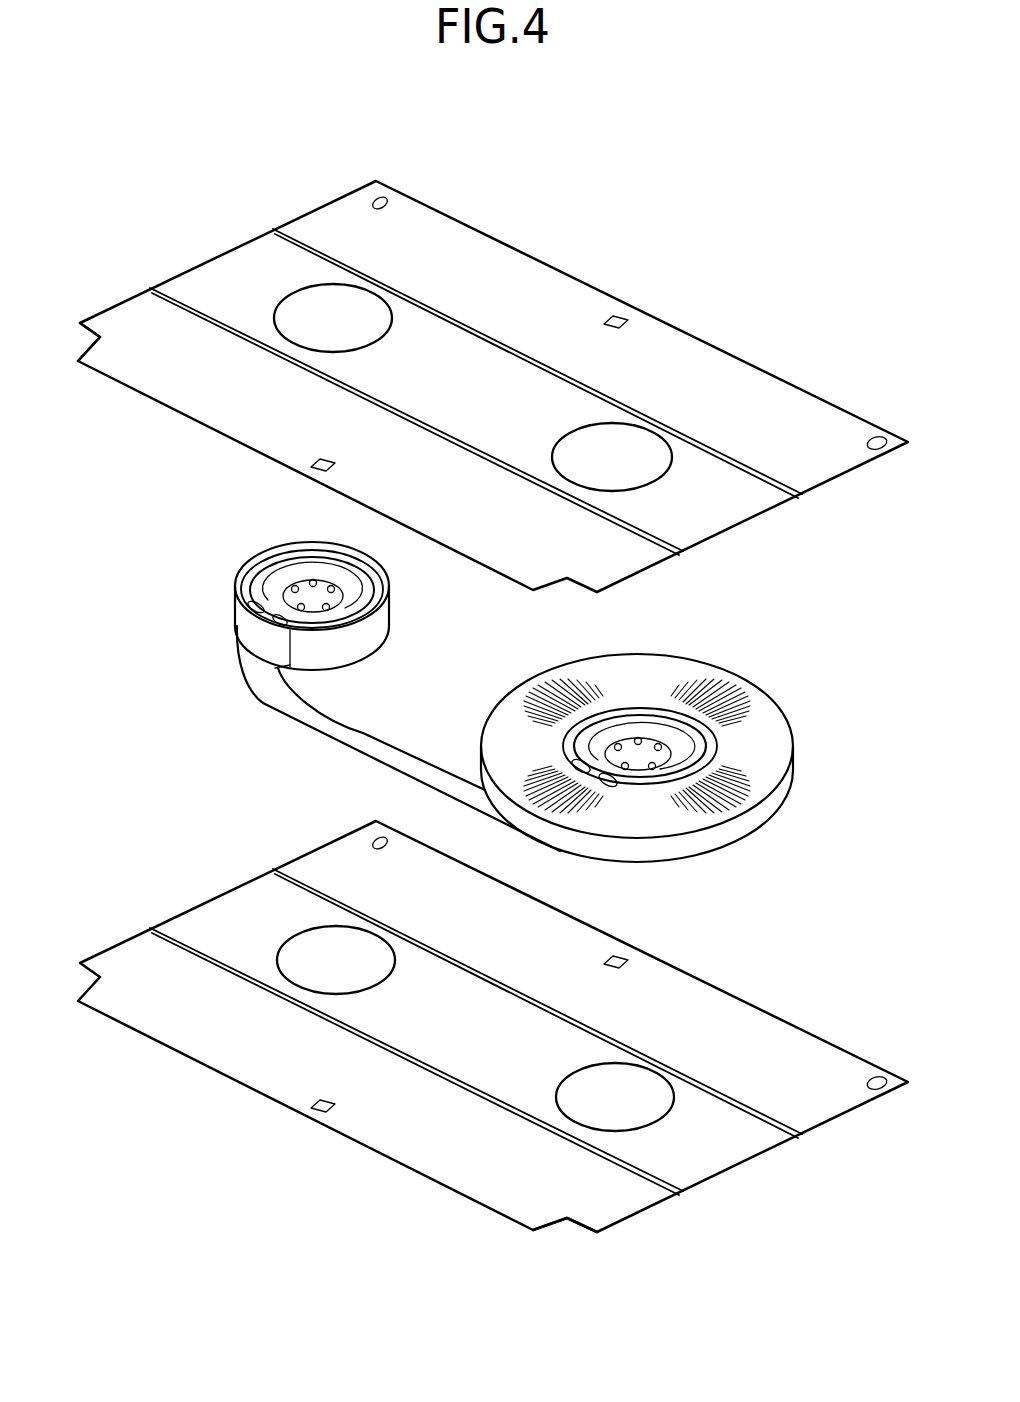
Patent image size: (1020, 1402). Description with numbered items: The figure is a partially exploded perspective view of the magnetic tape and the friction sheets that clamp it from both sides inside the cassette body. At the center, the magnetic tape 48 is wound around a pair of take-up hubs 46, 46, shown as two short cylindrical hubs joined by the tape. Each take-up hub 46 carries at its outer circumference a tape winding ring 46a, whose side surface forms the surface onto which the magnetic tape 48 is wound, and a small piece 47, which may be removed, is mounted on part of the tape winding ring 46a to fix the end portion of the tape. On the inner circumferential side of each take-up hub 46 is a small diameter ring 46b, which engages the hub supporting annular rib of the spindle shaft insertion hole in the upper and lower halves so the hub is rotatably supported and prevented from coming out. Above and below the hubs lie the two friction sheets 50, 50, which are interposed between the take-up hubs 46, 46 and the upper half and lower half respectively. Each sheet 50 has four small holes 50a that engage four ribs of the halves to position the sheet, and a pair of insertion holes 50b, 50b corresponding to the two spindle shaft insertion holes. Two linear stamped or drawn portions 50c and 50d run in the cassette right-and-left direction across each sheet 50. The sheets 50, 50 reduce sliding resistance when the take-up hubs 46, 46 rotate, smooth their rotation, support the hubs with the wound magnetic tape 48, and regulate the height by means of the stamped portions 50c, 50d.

The take-up hub 46 is at (498, 698).
The tape winding ring 46a is at (382, 620).
The small diameter ring 46b is at (300, 575).
The small piece 47 is at (253, 643).
The magnetic tape 48 is at (372, 742).
The friction sheet 50 is at (700, 370).
The small hole 50a is at (383, 198).
The insertion hole 50b is at (316, 302).
The stamped portion 50c is at (185, 310).
The stamped portion 50d is at (333, 260).